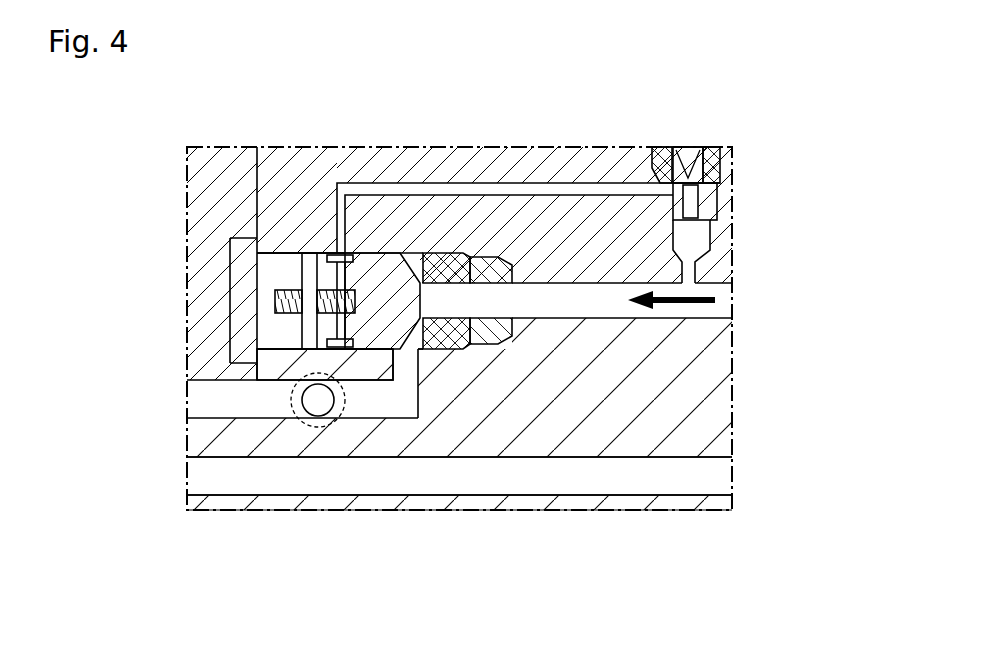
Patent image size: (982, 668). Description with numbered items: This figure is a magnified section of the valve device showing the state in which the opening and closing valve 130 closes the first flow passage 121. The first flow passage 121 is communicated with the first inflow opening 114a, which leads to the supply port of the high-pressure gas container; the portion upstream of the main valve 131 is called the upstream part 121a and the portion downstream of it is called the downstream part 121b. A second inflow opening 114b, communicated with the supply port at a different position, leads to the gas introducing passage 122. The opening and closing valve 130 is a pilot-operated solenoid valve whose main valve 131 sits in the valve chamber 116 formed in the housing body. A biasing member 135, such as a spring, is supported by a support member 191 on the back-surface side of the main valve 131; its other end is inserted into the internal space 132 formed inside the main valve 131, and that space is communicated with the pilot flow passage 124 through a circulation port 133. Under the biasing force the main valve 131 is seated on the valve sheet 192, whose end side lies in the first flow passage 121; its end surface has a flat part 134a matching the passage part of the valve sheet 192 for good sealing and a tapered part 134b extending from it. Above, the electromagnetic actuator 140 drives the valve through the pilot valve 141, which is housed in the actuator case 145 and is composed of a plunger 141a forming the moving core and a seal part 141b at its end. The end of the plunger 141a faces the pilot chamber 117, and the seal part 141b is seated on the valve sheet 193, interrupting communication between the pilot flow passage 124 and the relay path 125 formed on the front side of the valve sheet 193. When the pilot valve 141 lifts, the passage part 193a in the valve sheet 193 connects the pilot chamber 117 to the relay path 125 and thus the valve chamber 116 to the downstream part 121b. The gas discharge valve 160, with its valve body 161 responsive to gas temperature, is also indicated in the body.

The opening and closing valve 130 is at (352, 82).
The internal space 132 is at (326, 264).
The circulation port 133 is at (317, 253).
The main valve 131 is at (367, 265).
The pilot flow passage 124 is at (413, 250).
The flat part 134a is at (466, 258).
The tapered part 134b is at (425, 258).
The valve sheet 192 is at (498, 257).
The electromagnetic actuator 140 is at (645, 179).
The actuator case 145 is at (660, 162).
The pilot valve 141 is at (815, 92).
The plunger 141a is at (685, 165).
The seal part 141b is at (712, 165).
The pilot chamber 117 is at (707, 181).
The valve sheet 193 is at (707, 203).
The passage part 193a is at (700, 217).
The relay path 125 is at (700, 270).
The valve chamber 116 is at (300, 274).
The support member 191 is at (240, 280).
The biasing member 135 is at (283, 299).
The first inflow opening 114a is at (187, 393).
The second inflow opening 114b is at (187, 471).
The valve body 161 is at (291, 430).
The gas discharge valve 160 is at (298, 421).
The upstream part 121a is at (373, 400).
The downstream part 121b is at (583, 308).
The first flow passage 121 is at (480, 582).
The gas introducing passage 122 is at (652, 475).